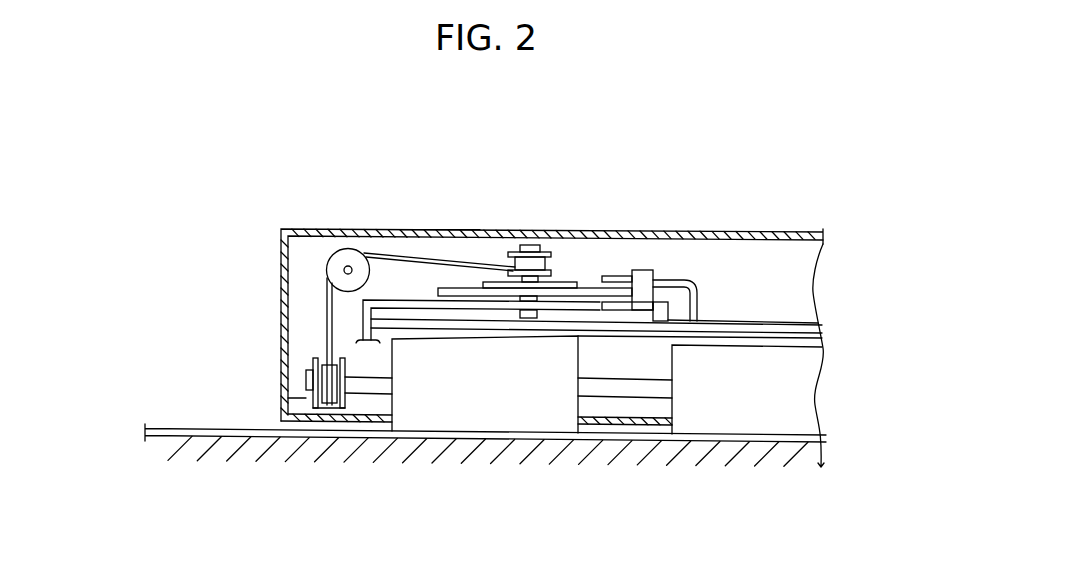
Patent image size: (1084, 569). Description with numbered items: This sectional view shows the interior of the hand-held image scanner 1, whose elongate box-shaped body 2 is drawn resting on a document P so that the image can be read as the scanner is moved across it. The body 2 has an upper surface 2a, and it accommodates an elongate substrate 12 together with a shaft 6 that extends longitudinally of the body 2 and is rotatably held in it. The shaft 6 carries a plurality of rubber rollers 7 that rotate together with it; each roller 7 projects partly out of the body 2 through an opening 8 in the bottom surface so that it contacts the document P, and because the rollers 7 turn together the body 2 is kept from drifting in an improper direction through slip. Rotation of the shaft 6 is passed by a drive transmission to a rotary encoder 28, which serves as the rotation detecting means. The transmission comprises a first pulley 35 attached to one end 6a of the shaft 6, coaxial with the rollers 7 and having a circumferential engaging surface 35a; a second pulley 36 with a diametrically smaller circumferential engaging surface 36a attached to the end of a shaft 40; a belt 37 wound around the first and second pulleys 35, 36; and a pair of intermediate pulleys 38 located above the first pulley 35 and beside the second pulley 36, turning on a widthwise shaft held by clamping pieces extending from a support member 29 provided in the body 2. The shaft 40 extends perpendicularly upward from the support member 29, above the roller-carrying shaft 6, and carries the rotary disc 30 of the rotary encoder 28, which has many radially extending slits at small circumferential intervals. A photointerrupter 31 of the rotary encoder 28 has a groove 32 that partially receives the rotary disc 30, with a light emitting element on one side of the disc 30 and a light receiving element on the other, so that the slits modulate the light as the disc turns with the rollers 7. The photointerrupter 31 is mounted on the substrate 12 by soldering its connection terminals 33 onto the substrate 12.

The hand-held image scanner 1 is at (783, 214).
The body 2 is at (281, 257).
The upper surface 2a is at (362, 236).
The shaft 6 is at (362, 396).
The one end of the shaft 6a is at (304, 372).
The rollers 7 is at (471, 423).
The opening 8 is at (358, 396).
The substrate 12 is at (803, 324).
The rotary encoder 28 is at (585, 298).
The support member 29 is at (405, 300).
The rotary disc 30 is at (615, 262).
The photointerrupter 31 is at (655, 272).
The groove 32 is at (596, 303).
The connection terminals 33 is at (676, 280).
The first pulley 35 is at (298, 398).
The circumferential engaging surface 35a is at (332, 405).
The second pulley 36 is at (548, 257).
The circumferential engaging surface 36a is at (507, 272).
The belt 37 is at (467, 261).
The intermediate pulleys 38 is at (332, 252).
The shaft 40 is at (529, 245).
The document P is at (185, 429).